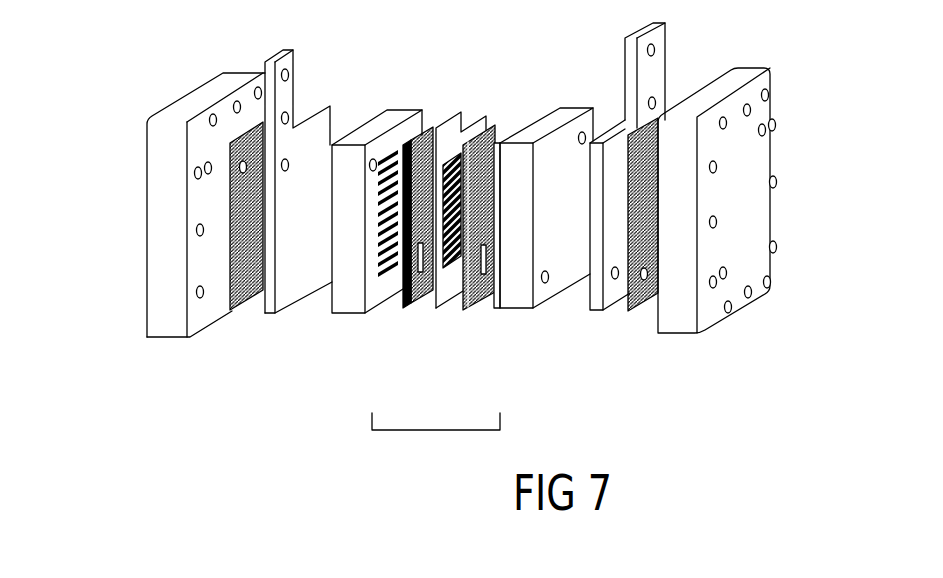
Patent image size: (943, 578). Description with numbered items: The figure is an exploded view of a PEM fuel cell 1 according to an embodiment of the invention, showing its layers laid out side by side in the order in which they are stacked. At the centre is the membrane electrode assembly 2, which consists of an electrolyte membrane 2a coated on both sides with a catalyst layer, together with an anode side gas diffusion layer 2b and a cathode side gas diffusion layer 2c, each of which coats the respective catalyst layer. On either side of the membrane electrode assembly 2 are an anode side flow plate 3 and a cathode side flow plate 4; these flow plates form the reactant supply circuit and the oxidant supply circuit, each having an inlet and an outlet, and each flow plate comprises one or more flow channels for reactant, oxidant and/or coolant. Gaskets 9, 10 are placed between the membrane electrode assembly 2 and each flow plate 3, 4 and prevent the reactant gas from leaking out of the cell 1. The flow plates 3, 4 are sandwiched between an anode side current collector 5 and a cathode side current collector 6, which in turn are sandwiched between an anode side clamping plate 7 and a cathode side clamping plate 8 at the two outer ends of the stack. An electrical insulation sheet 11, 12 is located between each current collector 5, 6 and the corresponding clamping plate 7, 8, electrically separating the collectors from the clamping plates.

The fuel cell 1 is at (444, 72).
The membrane electrode assembly 2 is at (436, 431).
The electrolyte membrane 2a is at (443, 289).
The anode side gas diffusion layer 2b is at (422, 302).
The cathode side gas diffusion layer 2c is at (490, 301).
The anode side flow plate 3 is at (353, 301).
The cathode side flow plate 4 is at (525, 309).
The anode side current collector 5 is at (276, 314).
The cathode side current collector 6 is at (608, 306).
The anode side clamping plate 7 is at (167, 326).
The cathode side clamping plate 8 is at (732, 330).
The gasket 9 is at (411, 301).
The gasket 10 is at (497, 309).
The electrical insulation sheet 11 is at (230, 314).
The electrical insulation sheet 12 is at (633, 297).